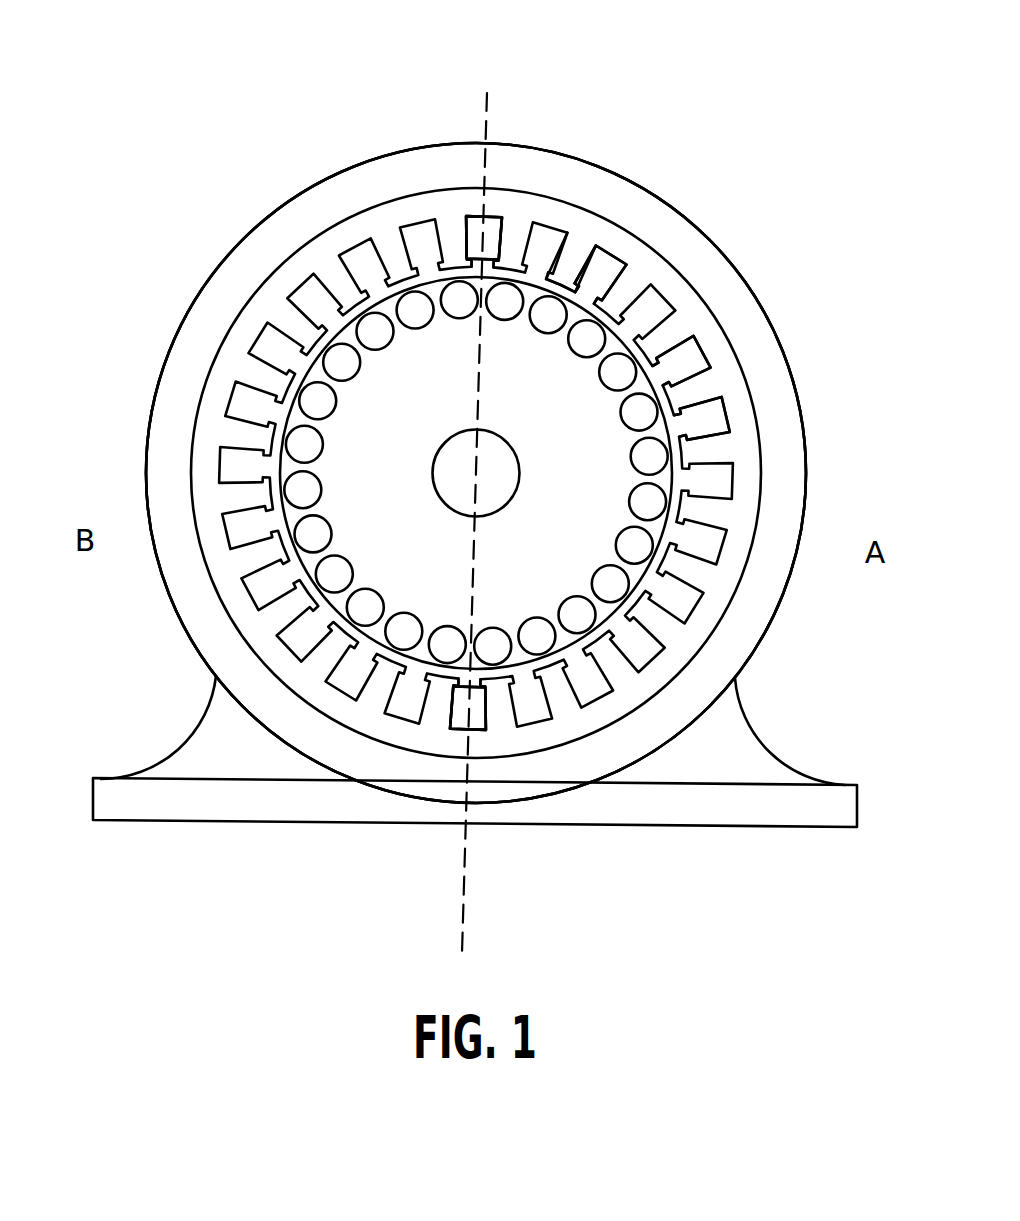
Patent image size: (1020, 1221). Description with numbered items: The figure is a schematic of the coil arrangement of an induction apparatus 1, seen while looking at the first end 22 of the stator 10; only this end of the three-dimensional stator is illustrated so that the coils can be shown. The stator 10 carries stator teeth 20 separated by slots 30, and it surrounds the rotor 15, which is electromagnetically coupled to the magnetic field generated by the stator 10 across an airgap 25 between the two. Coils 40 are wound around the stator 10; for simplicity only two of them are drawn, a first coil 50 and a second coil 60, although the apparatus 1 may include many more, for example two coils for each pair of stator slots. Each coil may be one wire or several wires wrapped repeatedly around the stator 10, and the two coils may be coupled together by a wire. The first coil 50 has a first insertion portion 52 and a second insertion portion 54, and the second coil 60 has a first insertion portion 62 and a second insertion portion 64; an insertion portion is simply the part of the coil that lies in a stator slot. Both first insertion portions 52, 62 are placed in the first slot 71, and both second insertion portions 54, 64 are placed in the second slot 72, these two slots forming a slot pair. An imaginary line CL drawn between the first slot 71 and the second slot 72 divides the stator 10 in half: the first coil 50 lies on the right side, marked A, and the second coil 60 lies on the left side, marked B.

The apparatus 1 is at (214, 153).
The stator 10 is at (710, 273).
The rotor 15 is at (700, 350).
The stator teeth 20 is at (570, 267).
The first end 22 is at (530, 157).
The airgap 25 is at (738, 452).
The slots 30 is at (603, 263).
The coils 40 is at (490, 765).
The first coil 50 is at (725, 633).
The first insertion portion 52 is at (488, 240).
The second insertion portion 54 is at (470, 733).
The second coil 60 is at (207, 363).
The first insertion portion 62 is at (476, 240).
The second insertion portion 64 is at (459, 733).
The first slot 71 is at (475, 243).
The second slot 72 is at (462, 697).
The imaginary line CL is at (463, 917).